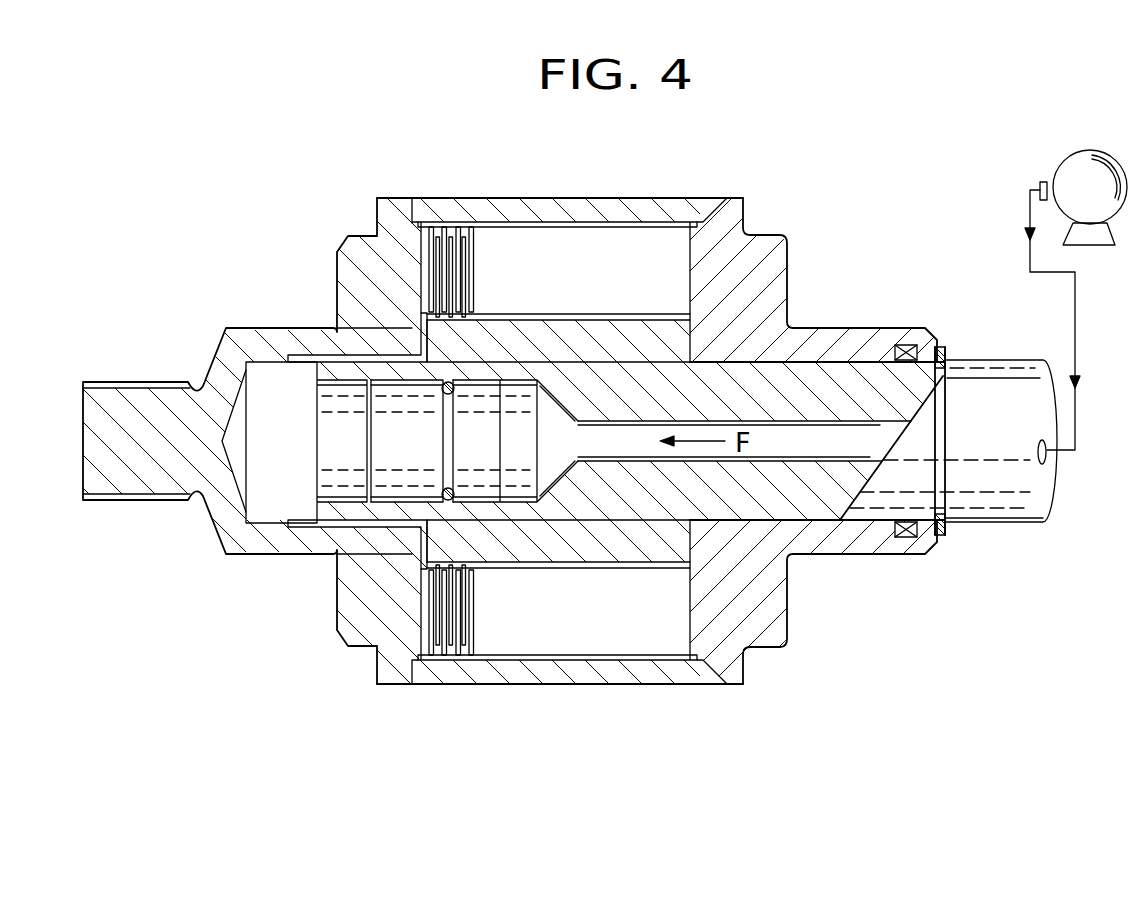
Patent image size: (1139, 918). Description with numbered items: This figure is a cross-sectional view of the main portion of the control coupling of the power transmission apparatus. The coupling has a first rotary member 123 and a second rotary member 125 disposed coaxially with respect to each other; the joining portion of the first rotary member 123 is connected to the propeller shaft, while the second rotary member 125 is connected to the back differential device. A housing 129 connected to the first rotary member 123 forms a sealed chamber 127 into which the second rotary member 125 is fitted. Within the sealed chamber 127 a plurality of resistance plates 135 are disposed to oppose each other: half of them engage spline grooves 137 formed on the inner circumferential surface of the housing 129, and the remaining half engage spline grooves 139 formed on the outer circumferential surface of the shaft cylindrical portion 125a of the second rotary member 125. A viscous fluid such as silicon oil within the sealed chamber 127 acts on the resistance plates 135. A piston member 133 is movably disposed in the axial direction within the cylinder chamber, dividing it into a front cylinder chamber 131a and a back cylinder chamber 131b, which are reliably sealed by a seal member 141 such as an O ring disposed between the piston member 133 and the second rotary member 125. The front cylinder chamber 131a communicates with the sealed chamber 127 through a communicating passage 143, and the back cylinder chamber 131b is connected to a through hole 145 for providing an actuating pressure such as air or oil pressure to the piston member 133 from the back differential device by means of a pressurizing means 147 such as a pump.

The first rotary member 123 is at (145, 382).
The second rotary member 125 is at (817, 366).
The shaft cylindrical portion 125a is at (640, 338).
The sealed chamber 127 is at (565, 237).
The housing 129 is at (525, 208).
The front cylinder chamber 131a is at (330, 433).
The back cylinder chamber 131b is at (578, 455).
The piston member 133 is at (482, 428).
The resistance plates 135 is at (472, 256).
The spline grooves 137 is at (486, 222).
The spline grooves 139 is at (573, 313).
The seal member 141 is at (446, 398).
The communicating passage 143 is at (300, 355).
The through hole 145 is at (868, 433).
The pressurizing means 147 is at (1047, 163).